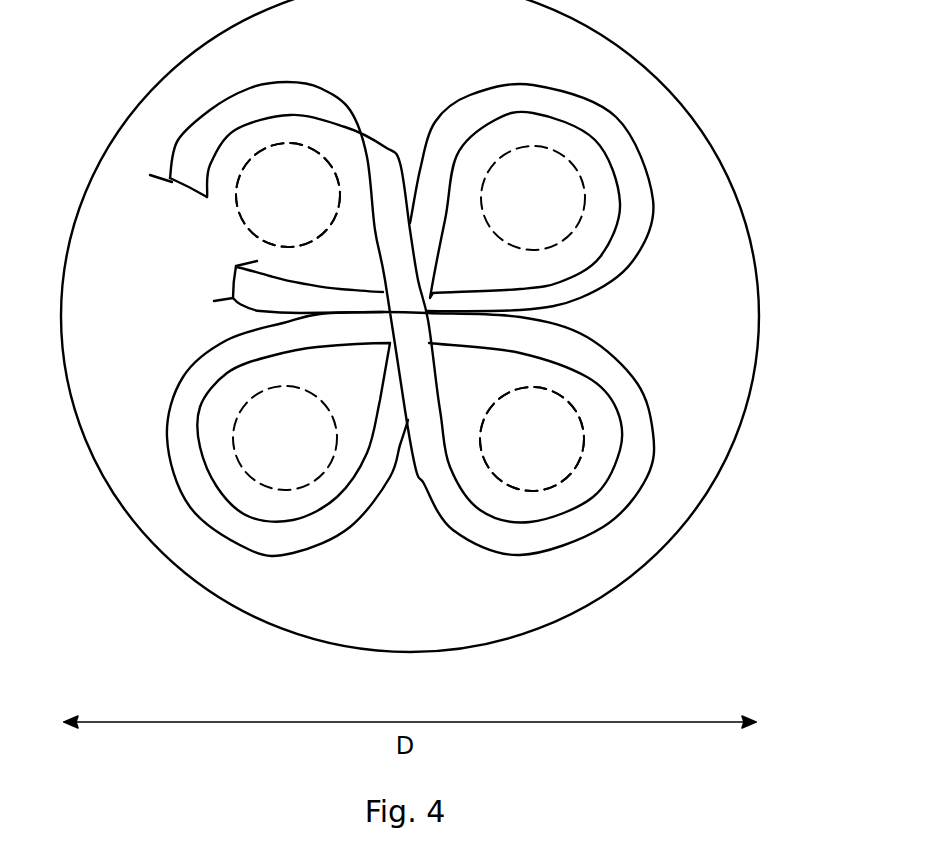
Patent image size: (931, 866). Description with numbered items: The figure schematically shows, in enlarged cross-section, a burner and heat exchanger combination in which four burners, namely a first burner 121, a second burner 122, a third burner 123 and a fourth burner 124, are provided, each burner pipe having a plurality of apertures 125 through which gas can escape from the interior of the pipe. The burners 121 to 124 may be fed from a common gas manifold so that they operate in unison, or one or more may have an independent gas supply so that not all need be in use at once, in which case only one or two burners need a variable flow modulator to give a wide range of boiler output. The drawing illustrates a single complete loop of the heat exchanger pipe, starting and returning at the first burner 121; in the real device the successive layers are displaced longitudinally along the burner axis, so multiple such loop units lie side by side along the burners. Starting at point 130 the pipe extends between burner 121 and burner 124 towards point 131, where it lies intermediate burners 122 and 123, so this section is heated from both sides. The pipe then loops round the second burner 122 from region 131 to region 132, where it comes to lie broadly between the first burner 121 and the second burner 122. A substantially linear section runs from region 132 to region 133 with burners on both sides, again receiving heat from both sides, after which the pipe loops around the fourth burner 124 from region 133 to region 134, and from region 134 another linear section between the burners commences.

The first burner 121 is at (235, 198).
The second burner 122 is at (572, 165).
The third burner 123 is at (585, 437).
The fourth burner 124 is at (262, 480).
The apertures 125 is at (262, 240).
The starting point of pipe 130 is at (232, 300).
The point intermediate burners 122 and 123 131 is at (613, 265).
The region between first and second burners 132 is at (445, 142).
The end of linear pipe section 133 is at (360, 502).
The region after loop around fourth burner 134 is at (210, 367).